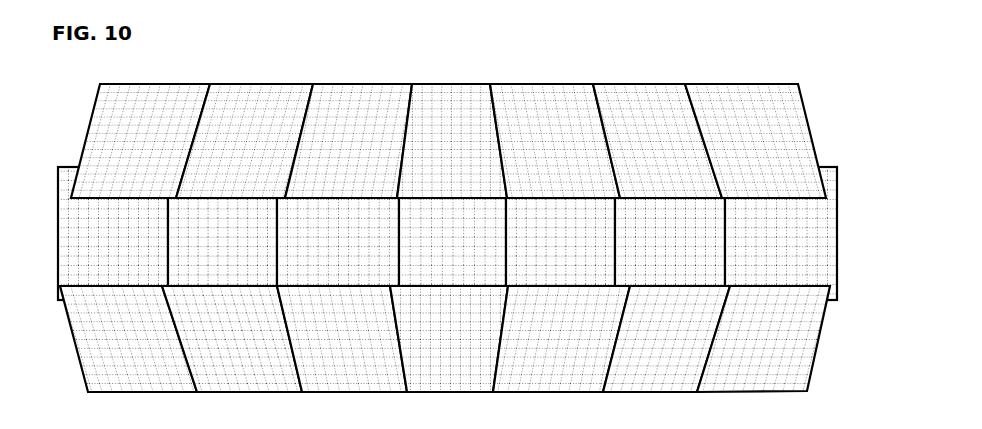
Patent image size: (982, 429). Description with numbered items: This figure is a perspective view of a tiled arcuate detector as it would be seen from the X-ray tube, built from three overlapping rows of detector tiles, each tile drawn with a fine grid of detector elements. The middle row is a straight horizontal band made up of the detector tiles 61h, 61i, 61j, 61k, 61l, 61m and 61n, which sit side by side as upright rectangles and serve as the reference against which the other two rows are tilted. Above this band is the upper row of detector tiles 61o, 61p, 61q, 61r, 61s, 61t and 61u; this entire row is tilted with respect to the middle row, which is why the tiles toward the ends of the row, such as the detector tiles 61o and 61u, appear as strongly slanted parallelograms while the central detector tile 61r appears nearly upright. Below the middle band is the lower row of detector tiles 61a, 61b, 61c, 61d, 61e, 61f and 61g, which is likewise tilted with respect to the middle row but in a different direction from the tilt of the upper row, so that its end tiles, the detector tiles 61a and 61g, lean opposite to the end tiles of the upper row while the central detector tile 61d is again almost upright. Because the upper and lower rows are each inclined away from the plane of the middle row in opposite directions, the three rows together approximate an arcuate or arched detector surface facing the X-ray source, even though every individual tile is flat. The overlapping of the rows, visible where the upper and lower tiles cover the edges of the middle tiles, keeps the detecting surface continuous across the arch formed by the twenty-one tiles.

The detector tile 61a is at (128, 339).
The detector tile 61b is at (232, 339).
The detector tile 61c is at (342, 339).
The detector tile 61d is at (449, 339).
The detector tile 61e is at (561, 339).
The detector tile 61f is at (666, 339).
The detector tile 61g is at (763, 339).
The detector tile 61h is at (113, 233).
The detector tile 61i is at (222, 233).
The detector tile 61j is at (338, 233).
The detector tile 61k is at (452, 233).
The detector tile 61l is at (560, 233).
The detector tile 61m is at (670, 233).
The detector tile 61n is at (781, 233).
The detector tile 61o is at (140, 141).
The detector tile 61p is at (244, 141).
The detector tile 61q is at (348, 141).
The detector tile 61r is at (452, 141).
The detector tile 61s is at (555, 141).
The detector tile 61t is at (657, 141).
The detector tile 61u is at (755, 141).